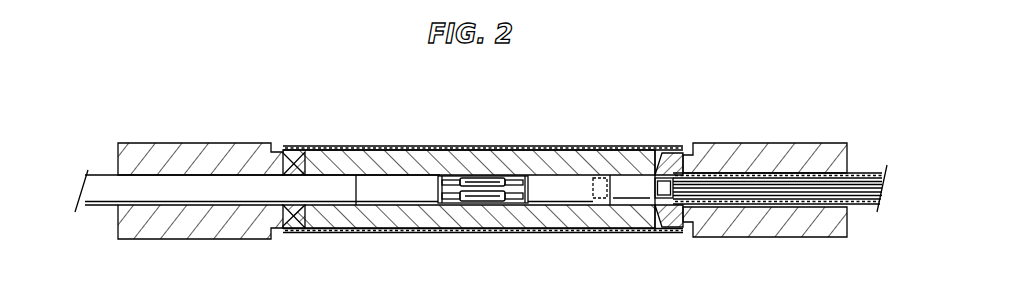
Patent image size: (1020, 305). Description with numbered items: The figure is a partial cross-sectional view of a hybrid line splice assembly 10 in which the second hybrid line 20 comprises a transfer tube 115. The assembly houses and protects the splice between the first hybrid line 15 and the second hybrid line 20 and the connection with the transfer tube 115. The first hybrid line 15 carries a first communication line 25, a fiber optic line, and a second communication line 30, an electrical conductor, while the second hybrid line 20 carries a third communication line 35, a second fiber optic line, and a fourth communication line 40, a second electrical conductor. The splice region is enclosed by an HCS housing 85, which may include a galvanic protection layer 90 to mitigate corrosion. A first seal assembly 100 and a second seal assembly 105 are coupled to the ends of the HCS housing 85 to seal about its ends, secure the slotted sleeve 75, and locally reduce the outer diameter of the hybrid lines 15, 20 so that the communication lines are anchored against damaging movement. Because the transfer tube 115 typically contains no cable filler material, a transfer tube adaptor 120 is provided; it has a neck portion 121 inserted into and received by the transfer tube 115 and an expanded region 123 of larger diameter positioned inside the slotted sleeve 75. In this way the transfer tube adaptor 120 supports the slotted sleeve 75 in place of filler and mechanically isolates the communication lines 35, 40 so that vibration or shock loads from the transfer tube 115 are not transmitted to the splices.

The hybrid line splice assembly 10 is at (276, 113).
The first hybrid line 15 is at (102, 182).
The second hybrid line 20 is at (865, 172).
The first communication line 25 is at (452, 177).
The second communication line 30 is at (446, 197).
The third communication line 35 is at (513, 177).
The fourth communication line 40 is at (522, 199).
The slotted sleeve 75 is at (390, 193).
The HCS housing 85 is at (336, 141).
The galvanic protection layer 90 is at (395, 148).
The first seal assembly 100 is at (188, 143).
The second seal assembly 105 is at (818, 142).
The transfer tube 115 is at (739, 160).
The transfer tube adaptor 120 is at (632, 209).
The neck portion 121 is at (669, 183).
The expanded region 123 is at (623, 180).